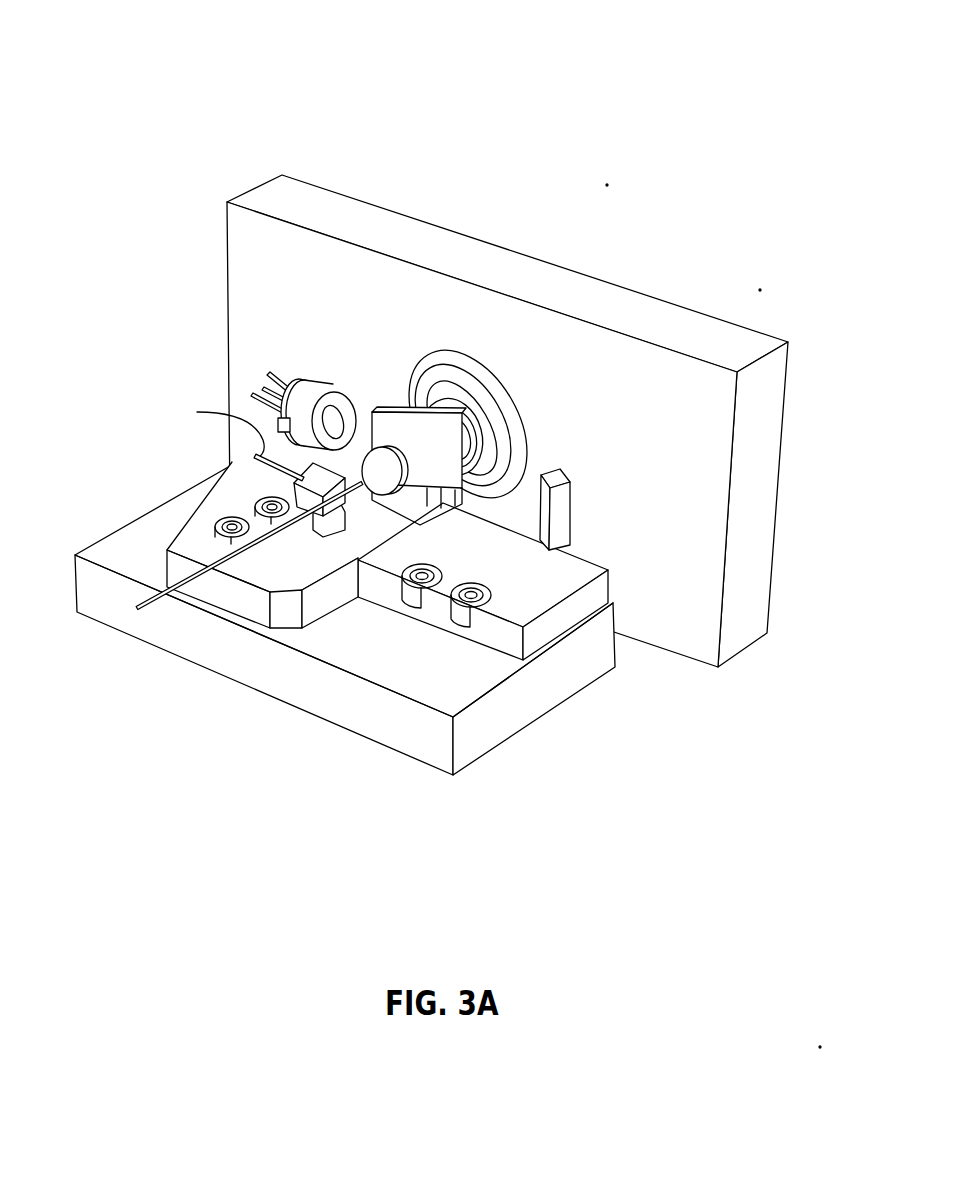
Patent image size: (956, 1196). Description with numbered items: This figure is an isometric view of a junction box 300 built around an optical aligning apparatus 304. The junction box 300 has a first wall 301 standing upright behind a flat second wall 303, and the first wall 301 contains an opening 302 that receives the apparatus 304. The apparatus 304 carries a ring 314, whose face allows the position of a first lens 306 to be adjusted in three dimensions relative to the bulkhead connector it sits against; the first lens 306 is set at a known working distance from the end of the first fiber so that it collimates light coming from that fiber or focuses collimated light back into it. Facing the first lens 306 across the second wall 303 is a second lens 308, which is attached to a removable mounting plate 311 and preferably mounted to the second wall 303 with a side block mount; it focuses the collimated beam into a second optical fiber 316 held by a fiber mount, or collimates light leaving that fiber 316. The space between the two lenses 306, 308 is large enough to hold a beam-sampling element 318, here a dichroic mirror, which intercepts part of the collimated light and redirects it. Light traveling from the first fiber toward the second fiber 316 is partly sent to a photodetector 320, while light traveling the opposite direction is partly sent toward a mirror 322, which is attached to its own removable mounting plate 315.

The junction box 300 is at (194, 105).
The first wall 301 is at (267, 238).
The opening 302 is at (477, 362).
The second wall 303 is at (508, 707).
The apparatus 304 is at (119, 340).
The first lens 306 is at (457, 393).
The second lens 308 is at (388, 482).
The removable mounting plate 311 is at (208, 532).
The ring 314 is at (493, 393).
The removable mounting plate 315 is at (578, 602).
The second optical fiber 316 is at (140, 606).
The beam-sampling element 318 is at (423, 438).
The photodetector 320 is at (329, 389).
The mirror 322 is at (560, 515).